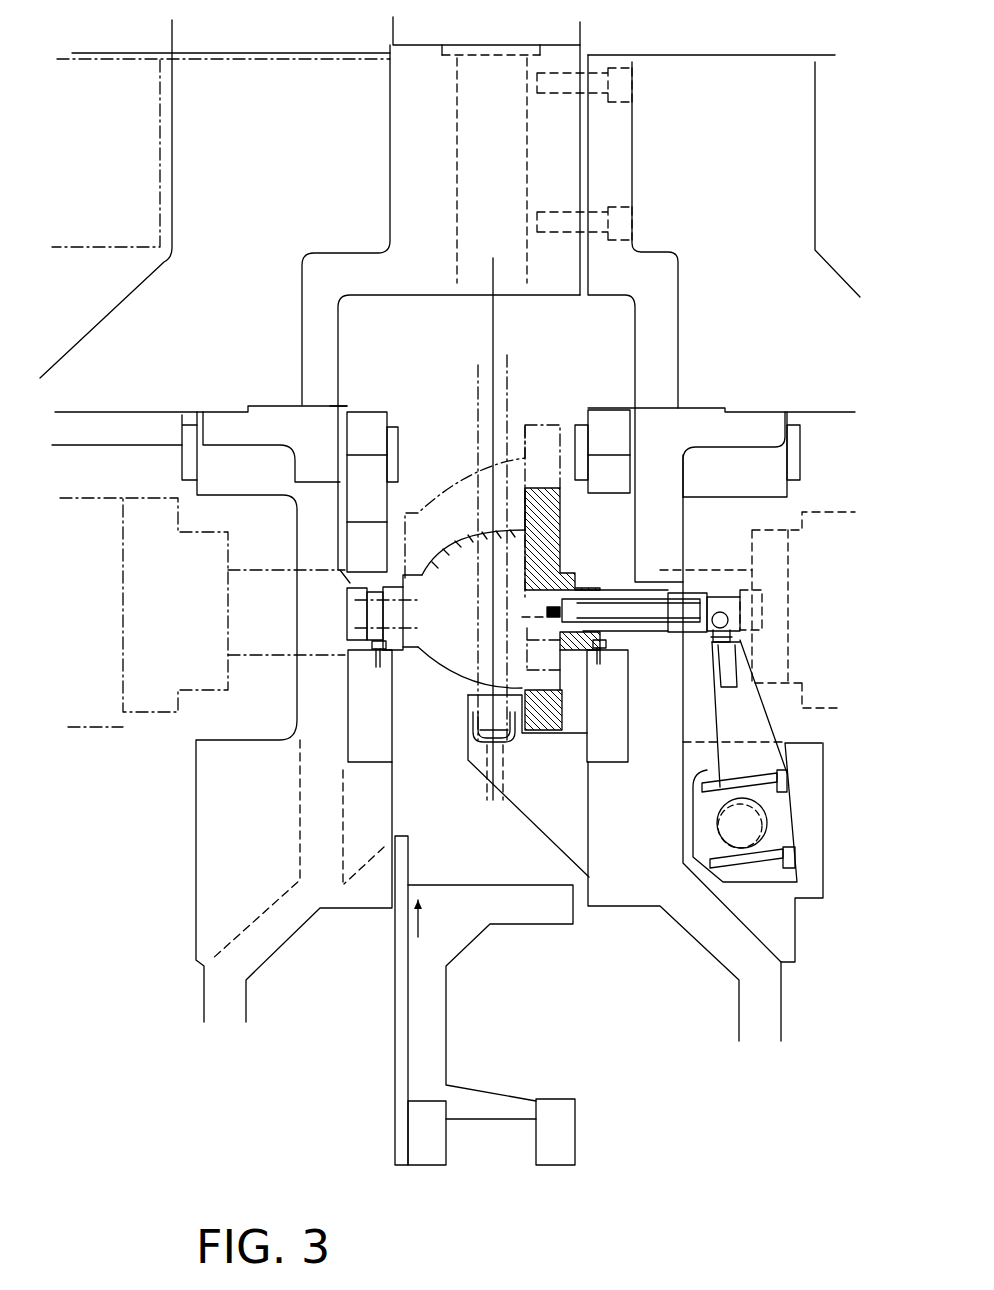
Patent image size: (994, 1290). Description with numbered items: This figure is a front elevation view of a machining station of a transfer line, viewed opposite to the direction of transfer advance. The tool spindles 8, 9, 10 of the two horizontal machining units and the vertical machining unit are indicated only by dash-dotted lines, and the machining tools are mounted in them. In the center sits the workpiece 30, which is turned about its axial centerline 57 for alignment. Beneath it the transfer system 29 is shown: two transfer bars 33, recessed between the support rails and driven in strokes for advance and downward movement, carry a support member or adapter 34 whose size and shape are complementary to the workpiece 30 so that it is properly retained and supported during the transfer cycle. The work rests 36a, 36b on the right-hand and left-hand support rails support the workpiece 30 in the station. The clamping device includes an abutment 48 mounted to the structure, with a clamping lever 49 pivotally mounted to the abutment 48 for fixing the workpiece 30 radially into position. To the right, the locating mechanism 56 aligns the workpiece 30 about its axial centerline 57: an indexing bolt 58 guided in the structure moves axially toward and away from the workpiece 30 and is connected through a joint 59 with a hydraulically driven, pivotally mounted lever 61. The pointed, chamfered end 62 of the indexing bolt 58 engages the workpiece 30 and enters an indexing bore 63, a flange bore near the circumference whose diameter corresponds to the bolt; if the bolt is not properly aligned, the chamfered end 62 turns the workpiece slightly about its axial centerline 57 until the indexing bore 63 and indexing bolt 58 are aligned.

The tool spindle 8 is at (267, 570).
The tool spindle 9 is at (508, 372).
The tool spindle 10 is at (718, 580).
The transfer system 29 is at (450, 737).
The workpiece 30 is at (475, 590).
The transfer bars 33 is at (432, 1158).
The support member or adapter 34 is at (478, 918).
The work rest 36a is at (600, 652).
The work rest 36b is at (365, 648).
The abutment 48 is at (635, 408).
The clamping lever 49 is at (615, 525).
The locating mechanism 56 is at (673, 642).
The axial centerline 57 is at (430, 613).
The indexing bolt 58 is at (648, 598).
The joint 59 is at (720, 603).
The lever 61 is at (765, 724).
The end of the indexing bolt 62 is at (555, 618).
The indexing bore 63 is at (550, 605).